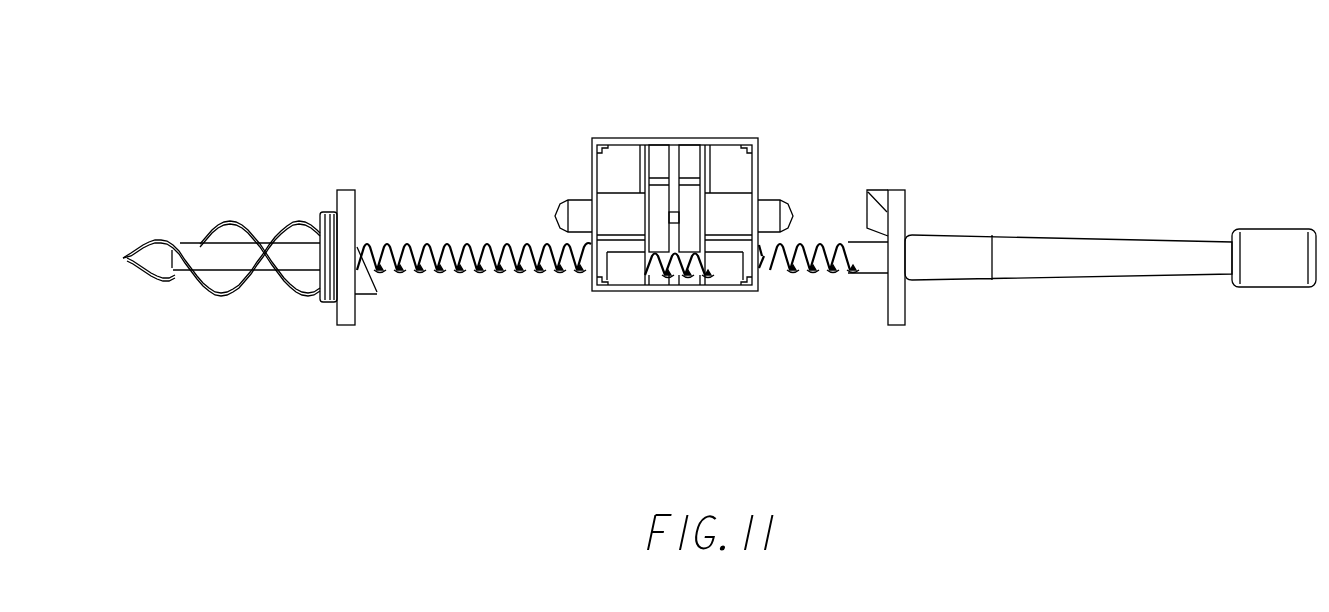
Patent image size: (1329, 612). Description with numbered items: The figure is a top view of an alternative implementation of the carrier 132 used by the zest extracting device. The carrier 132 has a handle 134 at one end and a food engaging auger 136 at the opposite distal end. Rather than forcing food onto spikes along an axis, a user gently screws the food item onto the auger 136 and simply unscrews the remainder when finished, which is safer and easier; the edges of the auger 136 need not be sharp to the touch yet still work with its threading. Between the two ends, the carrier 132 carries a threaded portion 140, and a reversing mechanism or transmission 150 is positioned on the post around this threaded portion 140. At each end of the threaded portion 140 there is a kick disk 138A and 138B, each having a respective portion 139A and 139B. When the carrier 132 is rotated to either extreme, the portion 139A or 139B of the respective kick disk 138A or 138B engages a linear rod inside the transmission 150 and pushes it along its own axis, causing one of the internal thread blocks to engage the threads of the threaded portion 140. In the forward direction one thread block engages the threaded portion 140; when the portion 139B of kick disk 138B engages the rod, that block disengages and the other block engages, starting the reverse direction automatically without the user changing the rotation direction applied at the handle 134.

The carrier 132 is at (868, 403).
The handle 134 is at (1160, 367).
The food engaging auger 136 is at (198, 407).
The kick disk 138A is at (352, 205).
The kick disk 138B is at (900, 200).
The portion of kick disk 139A is at (343, 403).
The portion of kick disk 139B is at (870, 209).
The threaded portion 140 is at (455, 425).
The reversing mechanism or transmission 150 is at (682, 138).